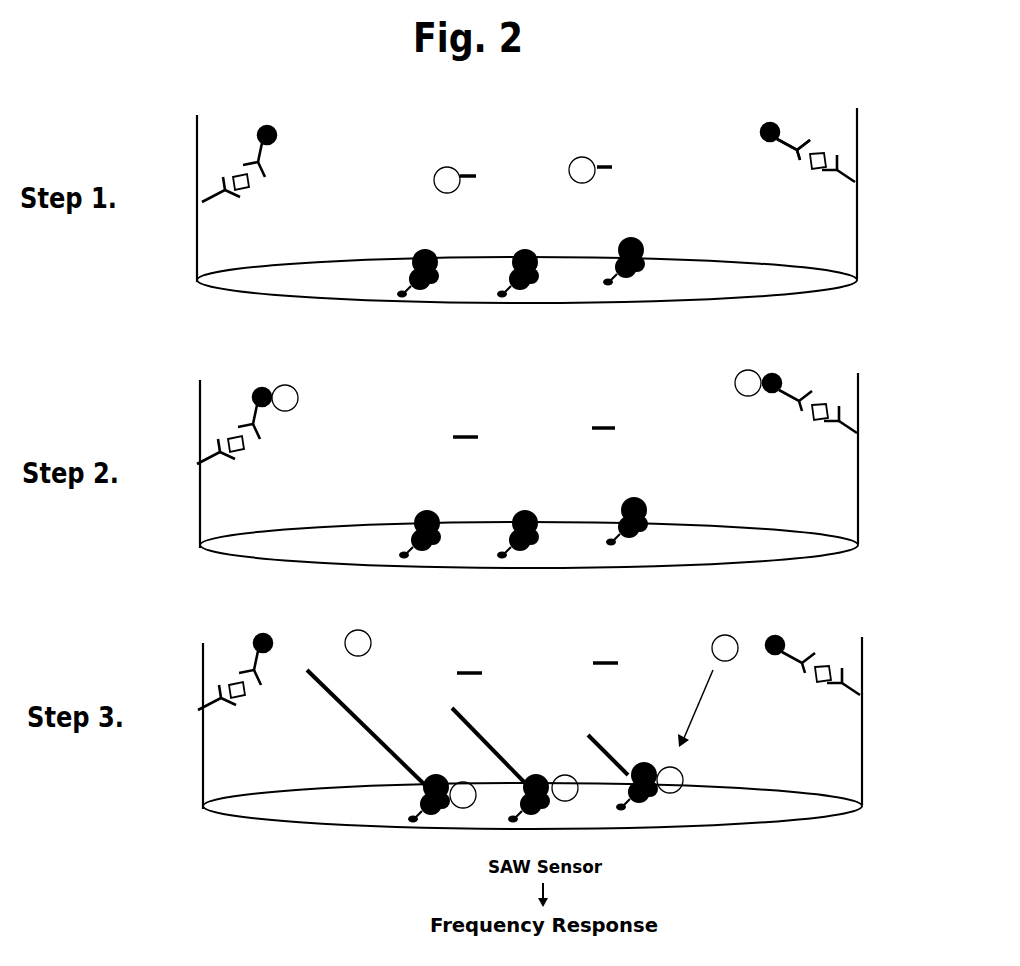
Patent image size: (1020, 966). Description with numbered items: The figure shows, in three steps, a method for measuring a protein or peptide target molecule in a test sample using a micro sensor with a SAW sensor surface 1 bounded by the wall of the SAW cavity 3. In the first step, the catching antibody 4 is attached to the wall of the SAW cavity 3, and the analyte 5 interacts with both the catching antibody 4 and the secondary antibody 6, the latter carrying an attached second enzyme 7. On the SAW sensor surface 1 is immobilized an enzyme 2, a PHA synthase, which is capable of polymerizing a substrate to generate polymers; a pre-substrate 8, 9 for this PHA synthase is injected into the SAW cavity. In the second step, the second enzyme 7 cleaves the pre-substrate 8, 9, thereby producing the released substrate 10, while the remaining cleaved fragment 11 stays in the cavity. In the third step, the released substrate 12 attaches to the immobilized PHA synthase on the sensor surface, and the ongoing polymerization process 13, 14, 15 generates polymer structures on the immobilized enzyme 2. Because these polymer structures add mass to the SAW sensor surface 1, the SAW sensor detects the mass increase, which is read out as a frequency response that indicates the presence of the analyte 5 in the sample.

The SAW sensor surface 1 is at (529, 543).
The immobilized enzyme 2 is at (528, 515).
The wall of the SAW cavity 3 is at (529, 458).
The catching antibody 4 is at (808, 162).
The analyte 5 is at (815, 139).
The secondary antibody 6 is at (775, 146).
The second enzyme 7 is at (760, 121).
The pre-substrate 8 is at (575, 160).
The pre-substrate 9 is at (608, 151).
The released substrate 10 is at (756, 369).
The unbound fragment 11 is at (605, 412).
The released substrate attaching to the immobilized PHA synthase 12 is at (708, 688).
The ongoing polymerization process 13 is at (609, 748).
The ongoing polymerization process 14 is at (489, 746).
The ongoing polymerization process 15 is at (366, 727).